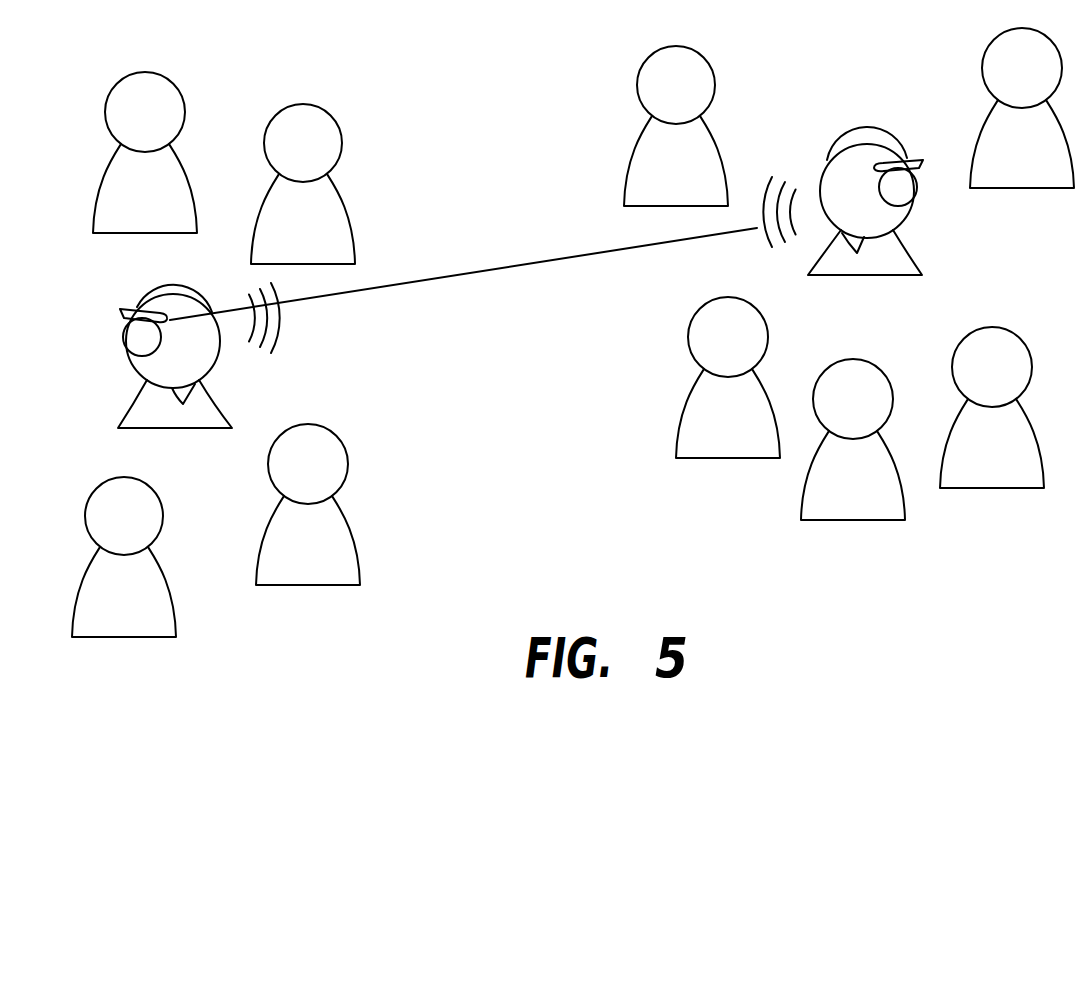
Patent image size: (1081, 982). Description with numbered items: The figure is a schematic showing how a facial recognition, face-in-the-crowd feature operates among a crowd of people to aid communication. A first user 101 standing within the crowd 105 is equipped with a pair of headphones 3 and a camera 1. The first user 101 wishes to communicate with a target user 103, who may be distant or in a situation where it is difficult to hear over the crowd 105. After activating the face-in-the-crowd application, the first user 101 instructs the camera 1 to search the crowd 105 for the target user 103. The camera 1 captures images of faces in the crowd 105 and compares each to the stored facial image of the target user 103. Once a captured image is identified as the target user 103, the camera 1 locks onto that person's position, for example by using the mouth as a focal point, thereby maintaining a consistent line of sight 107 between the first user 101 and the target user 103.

The camera 1 is at (121, 310).
The headphones 3 is at (123, 342).
The first user 101 is at (193, 349).
The target user 103 is at (919, 257).
The crowd 105 is at (175, 88).
The line of sight 107 is at (457, 277).